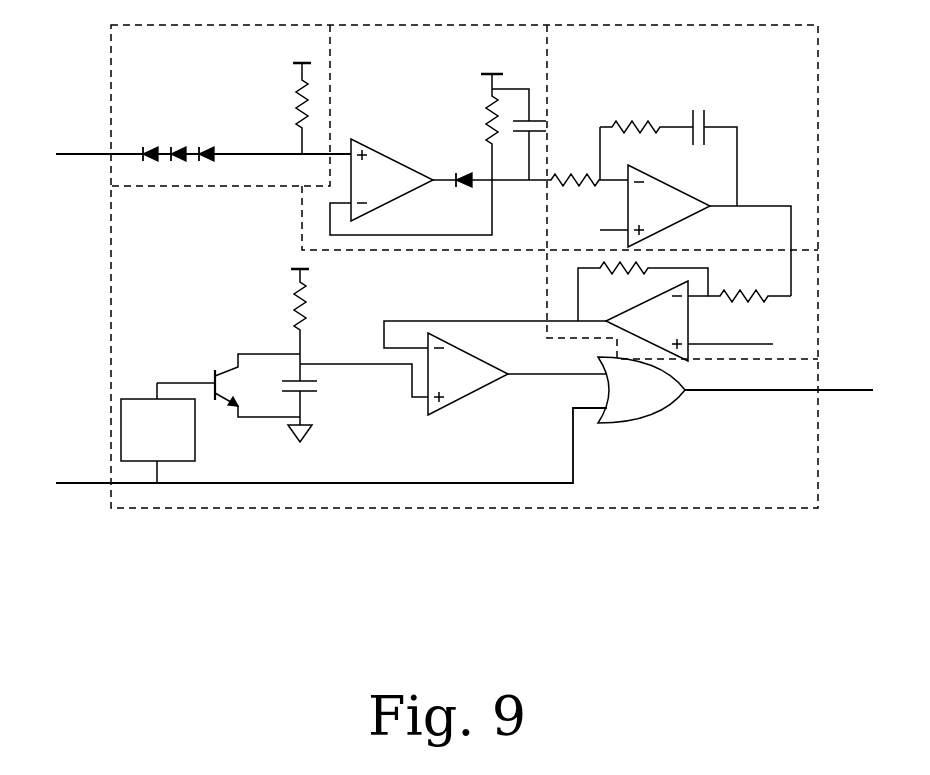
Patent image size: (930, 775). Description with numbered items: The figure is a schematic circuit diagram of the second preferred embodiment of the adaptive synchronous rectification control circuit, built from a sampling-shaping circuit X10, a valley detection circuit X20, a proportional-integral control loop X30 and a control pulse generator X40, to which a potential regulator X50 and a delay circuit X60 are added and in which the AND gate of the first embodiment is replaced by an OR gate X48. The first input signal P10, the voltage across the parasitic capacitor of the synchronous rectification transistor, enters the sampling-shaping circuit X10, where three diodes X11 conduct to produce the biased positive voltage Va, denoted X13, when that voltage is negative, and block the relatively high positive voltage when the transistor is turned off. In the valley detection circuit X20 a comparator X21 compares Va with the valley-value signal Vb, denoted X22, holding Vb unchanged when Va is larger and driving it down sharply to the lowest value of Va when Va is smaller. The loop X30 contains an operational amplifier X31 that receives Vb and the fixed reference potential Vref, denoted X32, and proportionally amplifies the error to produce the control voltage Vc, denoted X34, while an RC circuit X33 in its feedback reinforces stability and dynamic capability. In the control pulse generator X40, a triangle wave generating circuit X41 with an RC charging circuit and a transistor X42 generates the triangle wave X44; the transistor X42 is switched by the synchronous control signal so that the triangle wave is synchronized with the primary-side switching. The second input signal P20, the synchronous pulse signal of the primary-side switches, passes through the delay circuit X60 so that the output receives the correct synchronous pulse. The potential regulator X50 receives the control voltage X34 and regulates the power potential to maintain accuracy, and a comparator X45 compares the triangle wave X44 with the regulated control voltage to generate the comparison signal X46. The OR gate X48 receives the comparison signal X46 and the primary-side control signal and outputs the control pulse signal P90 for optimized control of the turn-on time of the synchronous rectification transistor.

The sampling-shaping circuit X10 is at (220, 105).
The diodes X11 is at (178, 141).
The biased positive voltage Va X13 is at (279, 98).
The first input signal P10 is at (203, 143).
The valley detection circuit X20 is at (560, 192).
The comparator X21 is at (438, 181).
The valley-value signal Vb X22 is at (501, 132).
The proportional-integral control loop X30 is at (578, 53).
The operational amplifier X31 is at (672, 209).
The reference potential Vref X32 is at (587, 184).
The RC circuit X33 is at (658, 151).
The control voltage Vc X34 is at (753, 236).
The control pulse generator X40 is at (175, 241).
The triangle wave generating circuit X41 is at (272, 305).
The transistor X42 is at (228, 398).
The triangle wave Vtriangle X44 is at (355, 403).
The comparator X45 is at (495, 373).
The comparison signal X46 is at (557, 361).
The OR gate X48 is at (641, 401).
The potential regulator X50 is at (696, 311).
The delay circuit X60 is at (157, 429).
The second input signal P20 is at (331, 445).
The control pulse signal P90 is at (779, 377).